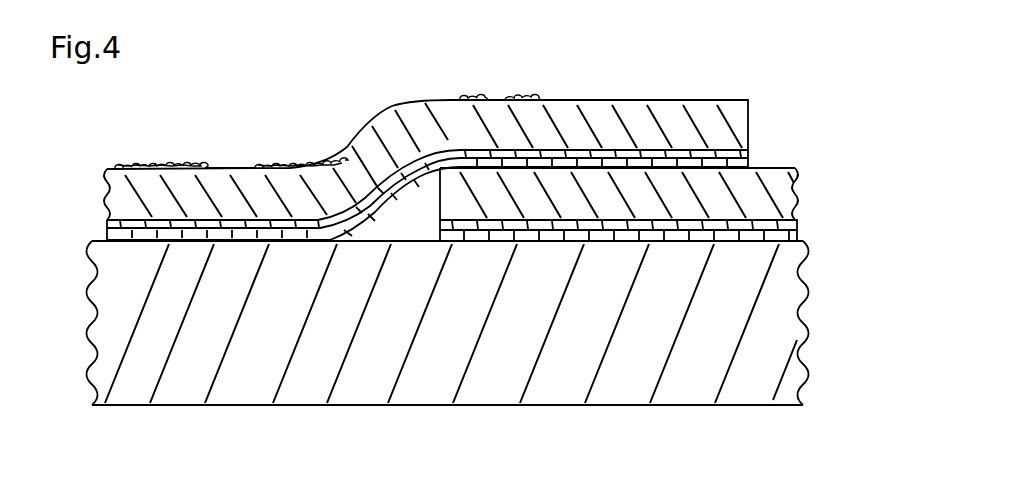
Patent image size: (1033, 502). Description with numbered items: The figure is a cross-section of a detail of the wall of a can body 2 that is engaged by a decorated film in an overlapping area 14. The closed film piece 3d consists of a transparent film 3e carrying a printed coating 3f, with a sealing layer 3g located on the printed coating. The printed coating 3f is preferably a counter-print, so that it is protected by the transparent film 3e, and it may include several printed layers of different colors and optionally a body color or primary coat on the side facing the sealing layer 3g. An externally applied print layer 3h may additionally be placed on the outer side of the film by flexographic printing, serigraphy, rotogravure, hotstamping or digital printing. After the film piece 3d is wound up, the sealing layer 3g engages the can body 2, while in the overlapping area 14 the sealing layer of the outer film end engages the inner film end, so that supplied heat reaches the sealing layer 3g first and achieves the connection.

The can body 2 is at (664, 405).
The closed film piece 3d is at (231, 166).
The transparent film 3e is at (105, 197).
The printed coating 3f is at (105, 222).
The sealing layer 3g is at (105, 233).
The externally applied print layer 3h is at (164, 163).
The overlapping area 14 is at (595, 96).